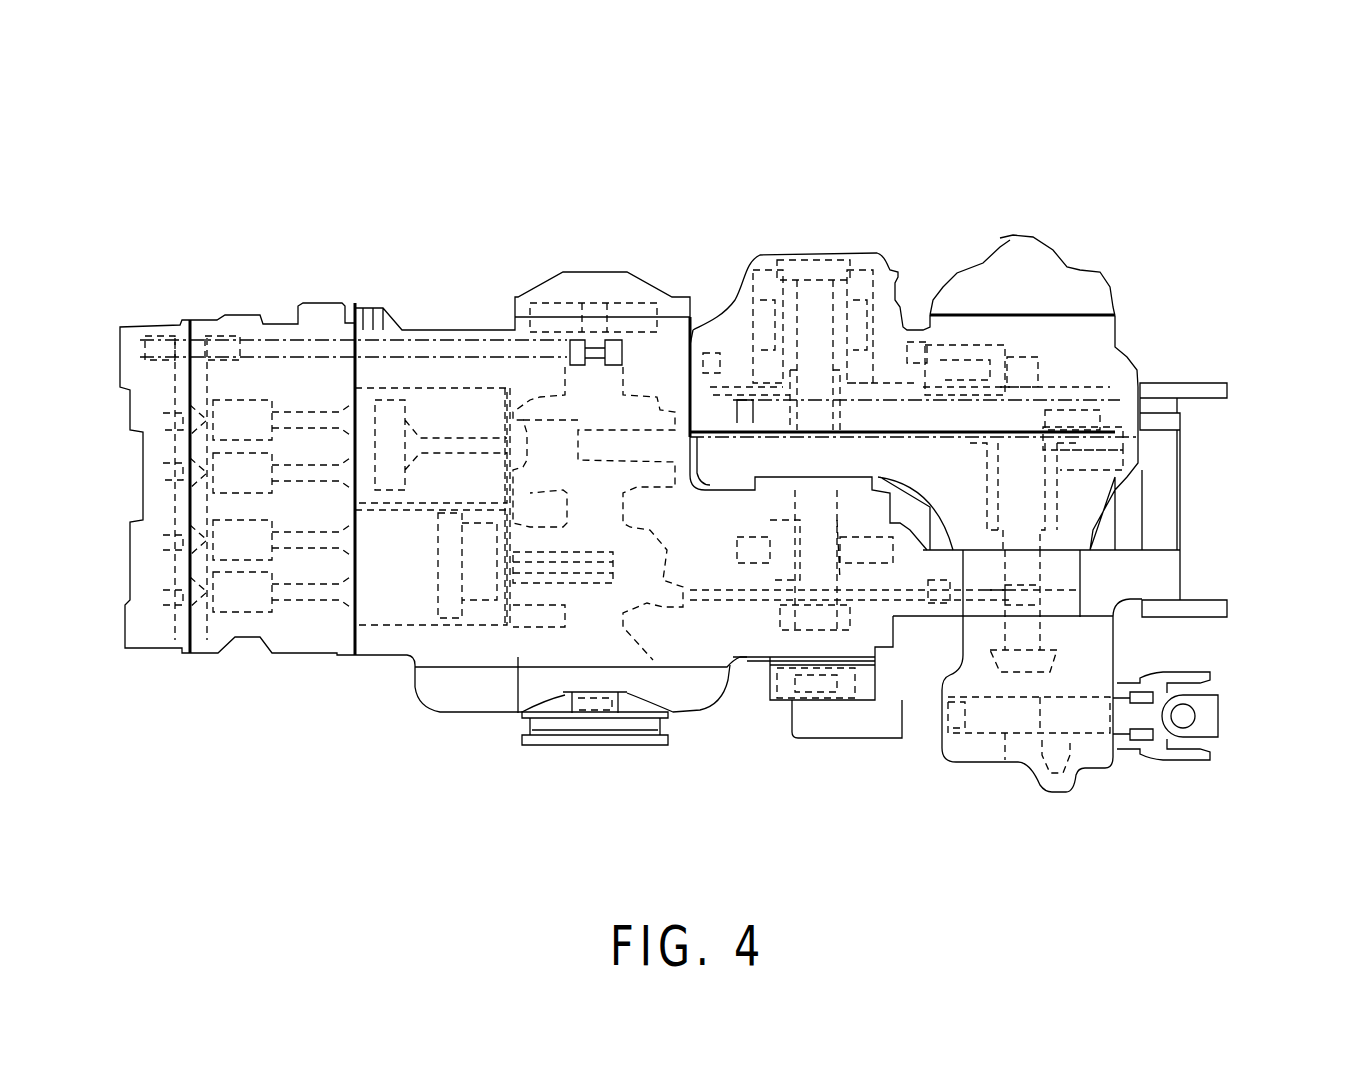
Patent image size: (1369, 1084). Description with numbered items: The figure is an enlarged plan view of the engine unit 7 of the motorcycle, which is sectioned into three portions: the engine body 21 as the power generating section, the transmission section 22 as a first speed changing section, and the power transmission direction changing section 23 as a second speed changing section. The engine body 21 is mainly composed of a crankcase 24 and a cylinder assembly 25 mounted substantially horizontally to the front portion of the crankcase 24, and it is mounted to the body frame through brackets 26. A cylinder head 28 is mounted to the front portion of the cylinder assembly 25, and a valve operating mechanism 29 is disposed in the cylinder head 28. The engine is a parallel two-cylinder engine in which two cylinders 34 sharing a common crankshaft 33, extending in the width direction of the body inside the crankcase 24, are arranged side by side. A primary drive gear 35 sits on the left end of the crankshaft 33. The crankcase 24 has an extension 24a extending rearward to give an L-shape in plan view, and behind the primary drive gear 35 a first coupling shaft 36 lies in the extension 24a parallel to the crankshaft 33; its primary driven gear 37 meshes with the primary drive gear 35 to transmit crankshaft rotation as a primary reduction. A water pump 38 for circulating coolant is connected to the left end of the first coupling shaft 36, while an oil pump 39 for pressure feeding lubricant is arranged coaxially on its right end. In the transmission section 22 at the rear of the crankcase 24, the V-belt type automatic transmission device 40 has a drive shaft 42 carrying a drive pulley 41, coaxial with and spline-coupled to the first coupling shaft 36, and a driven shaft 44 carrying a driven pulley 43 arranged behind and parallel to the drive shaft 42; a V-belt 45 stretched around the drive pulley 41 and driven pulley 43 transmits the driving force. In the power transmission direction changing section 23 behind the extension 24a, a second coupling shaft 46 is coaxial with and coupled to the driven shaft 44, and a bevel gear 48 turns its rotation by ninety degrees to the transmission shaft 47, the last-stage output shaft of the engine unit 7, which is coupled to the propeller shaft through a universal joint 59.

The engine unit 7 is at (677, 220).
The engine body 21 is at (425, 710).
The transmission section 22 is at (888, 262).
The power transmission direction changing section 23 is at (956, 765).
The crankcase 24 is at (523, 737).
The extension 24a is at (772, 640).
The cylinder assembly 25 is at (312, 658).
The brackets 26 is at (1200, 383).
The cylinder head 28 is at (226, 634).
The valve operating mechanism 29 is at (263, 380).
The crankshaft 33 is at (600, 625).
The cylinders 34 is at (447, 607).
The primary drive gear 35 is at (665, 608).
The first coupling shaft 36 is at (775, 625).
The primary driven gear 37 is at (921, 620).
The water pump 38 is at (837, 663).
The oil pump 39 is at (770, 537).
The automatic transmission device 40 is at (957, 370).
The drive pulley 41 is at (713, 340).
The drive shaft 42 is at (818, 262).
The driven pulley 43 is at (1077, 380).
The driven shaft 44 is at (1007, 383).
The V-belt 45 is at (903, 403).
The second coupling shaft 46 is at (1053, 630).
The transmission shaft 47 is at (1080, 720).
The bevel gear 48 is at (1044, 793).
The universal joint 59 is at (1185, 762).